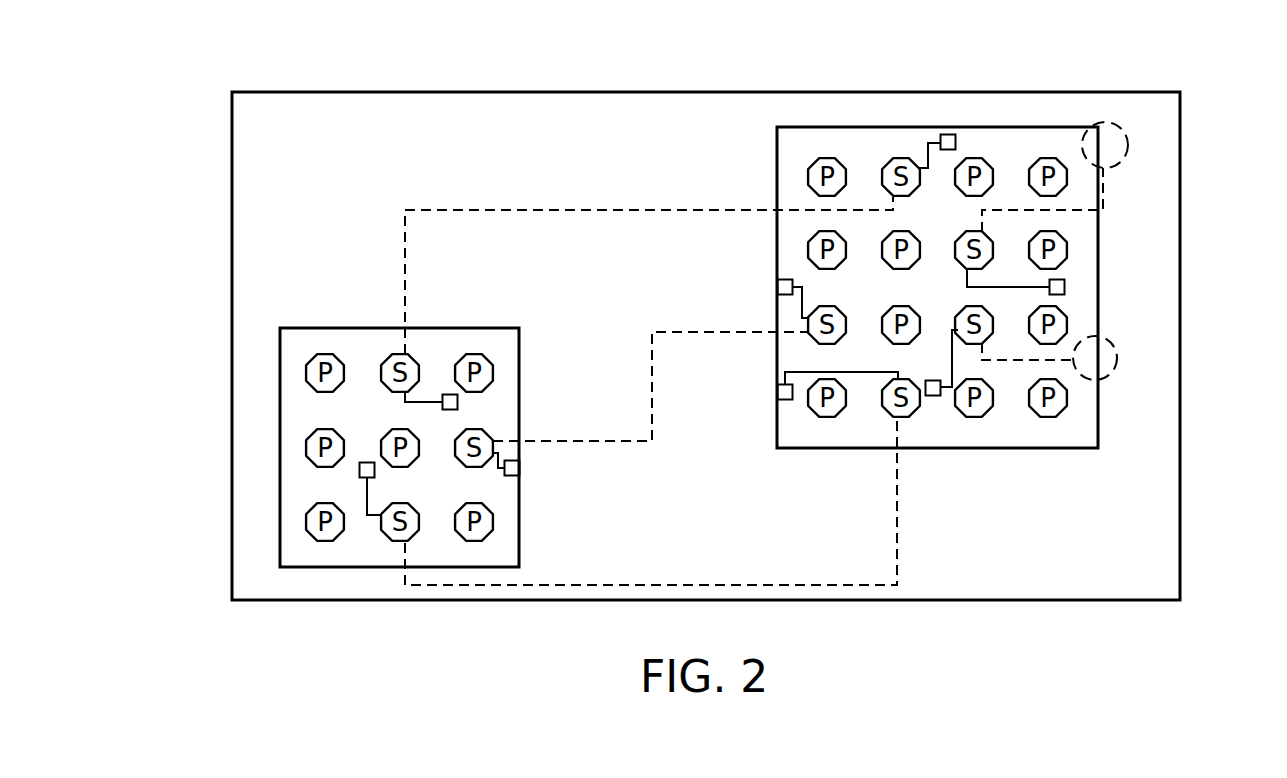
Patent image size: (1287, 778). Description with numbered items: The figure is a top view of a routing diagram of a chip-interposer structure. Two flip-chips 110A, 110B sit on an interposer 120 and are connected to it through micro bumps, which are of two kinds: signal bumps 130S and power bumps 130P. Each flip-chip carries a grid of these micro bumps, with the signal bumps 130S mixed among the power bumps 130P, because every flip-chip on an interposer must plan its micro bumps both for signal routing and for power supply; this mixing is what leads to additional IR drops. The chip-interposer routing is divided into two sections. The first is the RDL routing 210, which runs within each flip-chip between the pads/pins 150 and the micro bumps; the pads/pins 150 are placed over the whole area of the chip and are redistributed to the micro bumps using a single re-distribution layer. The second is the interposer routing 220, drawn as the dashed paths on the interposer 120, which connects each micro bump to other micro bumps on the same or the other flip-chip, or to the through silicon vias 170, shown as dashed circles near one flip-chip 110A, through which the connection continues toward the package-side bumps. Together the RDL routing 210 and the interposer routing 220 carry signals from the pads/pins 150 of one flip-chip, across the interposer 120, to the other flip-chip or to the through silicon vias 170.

The interposer 120 is at (232, 348).
The flip-chip 110A is at (900, 127).
The flip-chip 110B is at (280, 449).
The signal bump 130S is at (386, 355).
The power bump 130P is at (827, 420).
The pad/pin 150 is at (514, 478).
The through silicon via 170 is at (1126, 132).
The RDL routing 210 is at (937, 398).
The interposer routing 220 is at (575, 210).